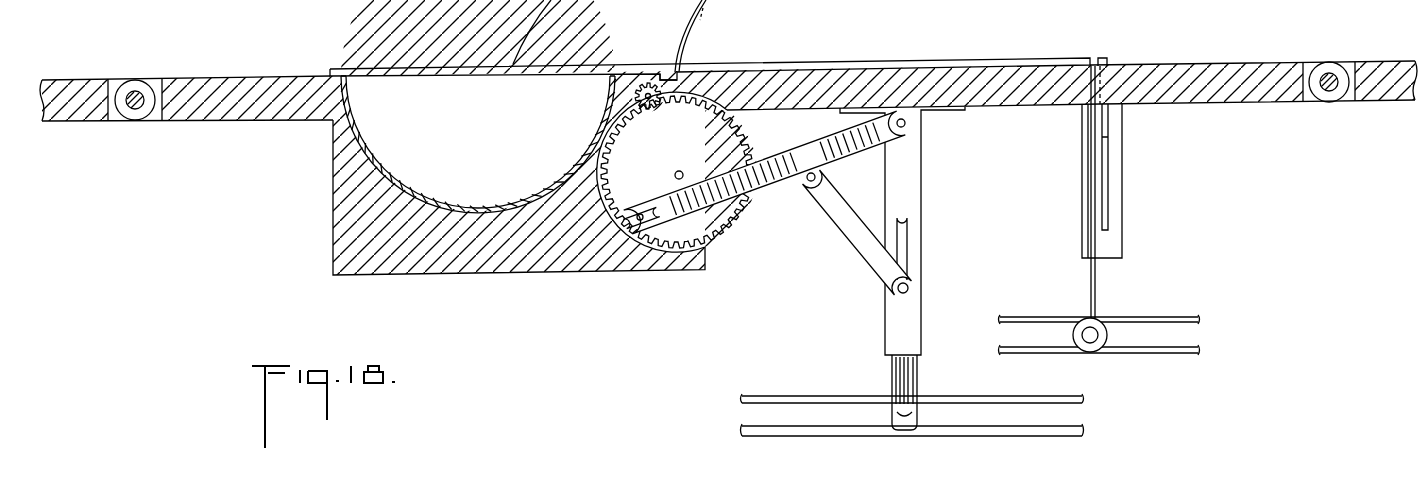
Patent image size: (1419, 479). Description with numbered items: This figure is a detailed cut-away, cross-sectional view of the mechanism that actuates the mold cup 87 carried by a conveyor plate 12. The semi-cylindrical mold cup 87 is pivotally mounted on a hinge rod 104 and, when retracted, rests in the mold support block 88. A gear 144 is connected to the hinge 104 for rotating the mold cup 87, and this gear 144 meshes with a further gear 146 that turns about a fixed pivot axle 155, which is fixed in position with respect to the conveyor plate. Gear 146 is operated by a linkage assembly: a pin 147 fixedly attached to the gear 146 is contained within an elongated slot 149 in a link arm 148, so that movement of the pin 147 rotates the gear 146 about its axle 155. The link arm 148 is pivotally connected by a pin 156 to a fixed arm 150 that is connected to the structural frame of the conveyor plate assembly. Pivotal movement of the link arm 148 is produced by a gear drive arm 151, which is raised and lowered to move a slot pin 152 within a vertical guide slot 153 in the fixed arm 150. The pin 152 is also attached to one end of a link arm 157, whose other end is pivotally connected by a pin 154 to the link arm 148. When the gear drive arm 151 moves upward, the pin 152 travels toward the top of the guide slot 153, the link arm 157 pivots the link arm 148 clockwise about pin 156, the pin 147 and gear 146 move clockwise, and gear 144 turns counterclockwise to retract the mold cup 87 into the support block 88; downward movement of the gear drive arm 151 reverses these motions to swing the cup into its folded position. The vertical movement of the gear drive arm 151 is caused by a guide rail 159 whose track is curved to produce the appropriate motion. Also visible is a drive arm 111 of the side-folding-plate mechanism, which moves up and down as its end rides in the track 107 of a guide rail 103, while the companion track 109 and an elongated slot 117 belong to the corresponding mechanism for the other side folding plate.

The conveyor plate 12 is at (1228, 65).
The mold cup 87 is at (363, 147).
The mold support block 88 is at (352, 254).
The guide rail 103 is at (1175, 317).
The hinge rod 104 is at (636, 98).
The track 107 is at (428, 1).
The track 109 is at (871, 36).
The drive arm 111 is at (1095, 287).
The elongated slot 117 is at (1154, 5).
The gear 144 is at (659, 76).
The gear 146 is at (718, 218).
The pin 147 is at (640, 222).
The link arm 148 is at (770, 188).
The elongated slot 149 is at (651, 211).
The fixed arm 150 is at (906, 172).
The gear drive arm 151 is at (898, 372).
The slot pin 152 is at (910, 288).
The vertical guide slot 153 is at (903, 226).
The pin 154 is at (809, 170).
The fixed pivot axle 155 is at (692, 157).
The pin 156 is at (906, 124).
The link arm 157 is at (860, 243).
The guide rail 159 is at (957, 428).